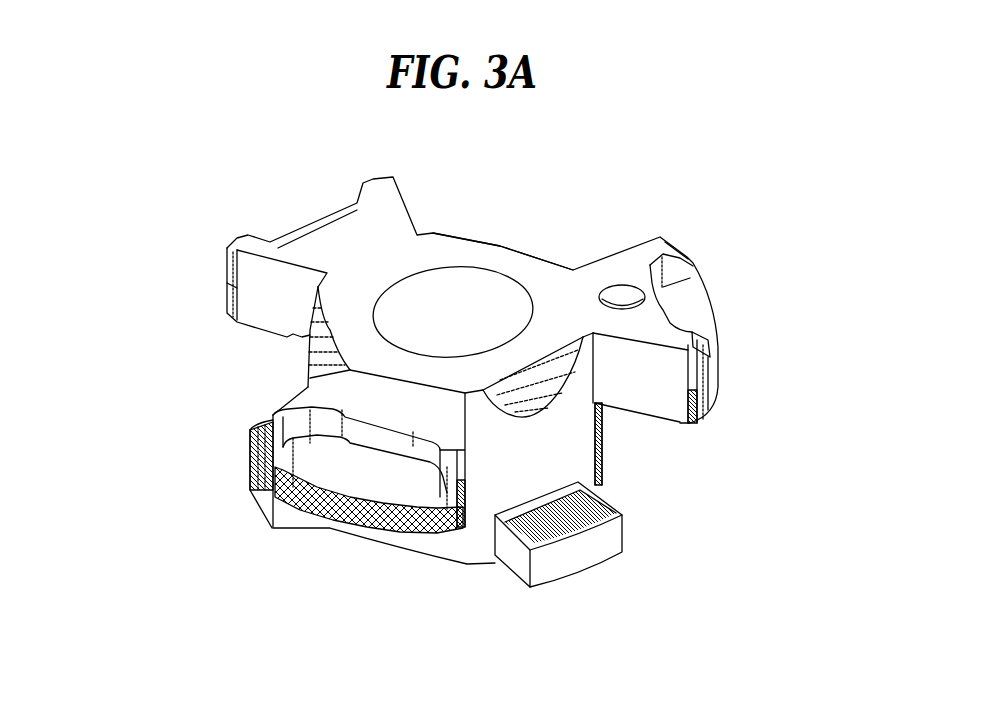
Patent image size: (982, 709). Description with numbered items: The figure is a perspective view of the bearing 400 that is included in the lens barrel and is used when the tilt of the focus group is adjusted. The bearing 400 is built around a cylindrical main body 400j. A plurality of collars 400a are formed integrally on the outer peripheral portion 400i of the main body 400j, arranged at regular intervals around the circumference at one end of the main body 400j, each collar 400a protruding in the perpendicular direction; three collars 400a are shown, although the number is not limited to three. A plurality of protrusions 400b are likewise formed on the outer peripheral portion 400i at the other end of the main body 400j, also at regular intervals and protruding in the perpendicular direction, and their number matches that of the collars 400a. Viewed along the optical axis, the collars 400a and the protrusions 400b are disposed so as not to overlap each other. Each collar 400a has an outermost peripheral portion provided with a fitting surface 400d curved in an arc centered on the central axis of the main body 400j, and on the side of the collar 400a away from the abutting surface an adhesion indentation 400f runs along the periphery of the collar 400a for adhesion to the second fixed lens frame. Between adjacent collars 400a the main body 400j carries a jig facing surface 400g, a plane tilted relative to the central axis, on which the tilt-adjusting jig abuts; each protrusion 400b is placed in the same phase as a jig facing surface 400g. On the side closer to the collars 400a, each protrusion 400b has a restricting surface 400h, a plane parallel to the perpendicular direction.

The bearing 400 is at (463, 253).
The collar 400a is at (360, 226).
The protrusion 400b is at (572, 560).
The fitting surface 400d is at (328, 497).
The adhesion indentation 400f is at (297, 228).
The jig facing surface 400g is at (327, 355).
The restricting surface 400h is at (265, 443).
The outer peripheral portion 400i is at (499, 465).
The main body 400j is at (512, 260).